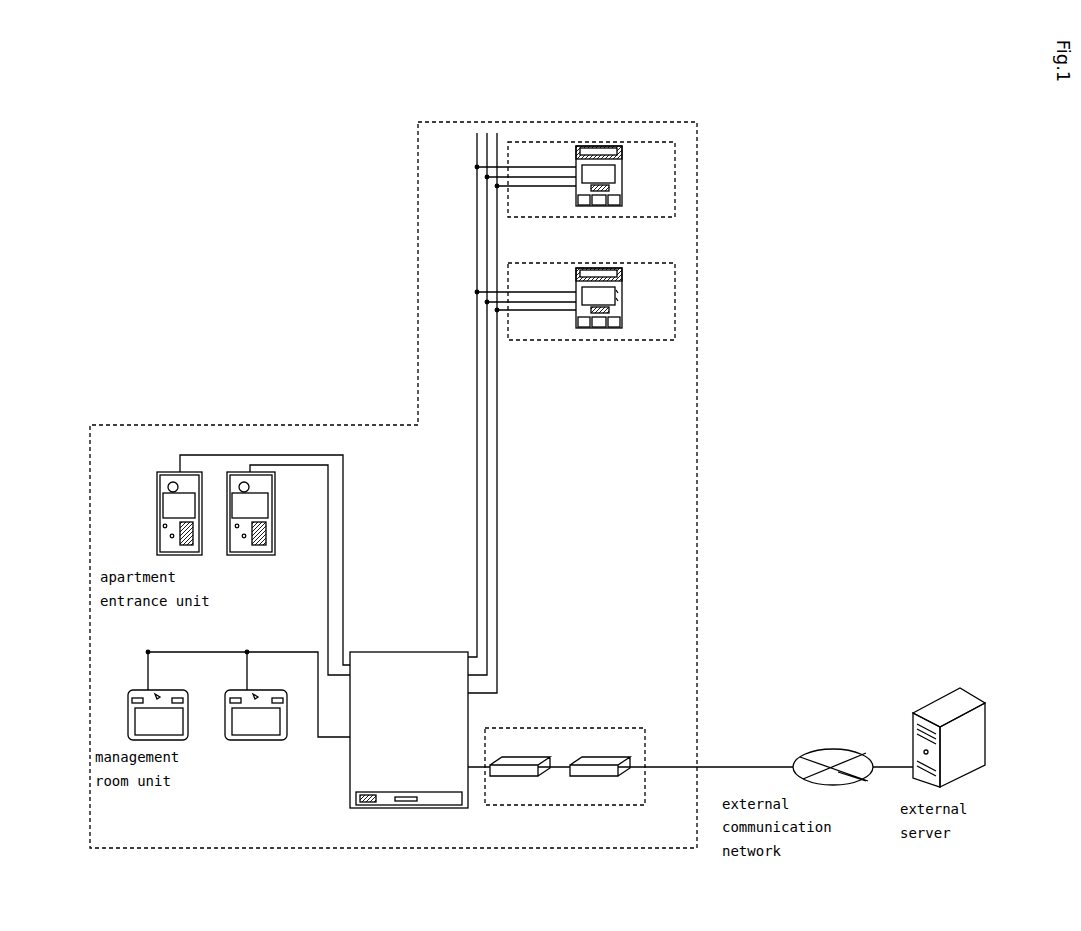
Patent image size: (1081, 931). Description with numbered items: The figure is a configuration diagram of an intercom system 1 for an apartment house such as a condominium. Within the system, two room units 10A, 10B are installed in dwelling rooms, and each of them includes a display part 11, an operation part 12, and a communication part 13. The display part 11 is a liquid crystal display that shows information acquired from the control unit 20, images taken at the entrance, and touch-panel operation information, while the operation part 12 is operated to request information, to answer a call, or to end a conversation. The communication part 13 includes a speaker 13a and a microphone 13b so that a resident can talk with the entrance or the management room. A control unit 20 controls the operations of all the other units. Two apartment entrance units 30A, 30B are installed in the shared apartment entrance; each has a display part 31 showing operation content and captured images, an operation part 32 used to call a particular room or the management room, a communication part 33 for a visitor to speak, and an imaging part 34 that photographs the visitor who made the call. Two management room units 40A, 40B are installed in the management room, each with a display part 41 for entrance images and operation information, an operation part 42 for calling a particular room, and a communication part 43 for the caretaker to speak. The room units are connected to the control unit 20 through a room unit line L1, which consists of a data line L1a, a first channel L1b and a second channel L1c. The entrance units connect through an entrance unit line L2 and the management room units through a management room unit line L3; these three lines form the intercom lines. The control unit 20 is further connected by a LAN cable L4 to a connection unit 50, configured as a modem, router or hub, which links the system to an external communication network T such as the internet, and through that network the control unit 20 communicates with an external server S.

The intercom system for an apartment house 1 is at (417, 245).
The room unit 10A is at (625, 316).
The room unit 10B is at (596, 207).
The display part 11 is at (615, 300).
The operation part 12 is at (620, 305).
The communication part 13 is at (675, 285).
The speaker 13a is at (608, 274).
The microphone 13b is at (614, 296).
The control unit 20 is at (401, 651).
The apartment entrance unit 30A is at (222, 547).
The apartment entrance unit 30B is at (266, 555).
The display part 31 is at (164, 505).
The operation part 32 is at (207, 520).
The communication part 33 is at (165, 523).
The imaging part 34 is at (157, 480).
The management room unit 40A is at (131, 698).
The management room unit 40B is at (225, 735).
The display part 41 is at (178, 722).
The operation part 42 is at (165, 712).
The communication part 43 is at (132, 700).
The connection unit 50 is at (599, 728).
The room unit line L1 is at (550, 413).
The data line L1a is at (477, 491).
The first channel L1b is at (487, 510).
The second channel L1c is at (600, 470).
The entrance unit line L2 is at (343, 530).
The management room unit line L3 is at (318, 730).
The LAN cable L4 is at (475, 769).
The external communication network T is at (830, 749).
The external server S is at (931, 706).